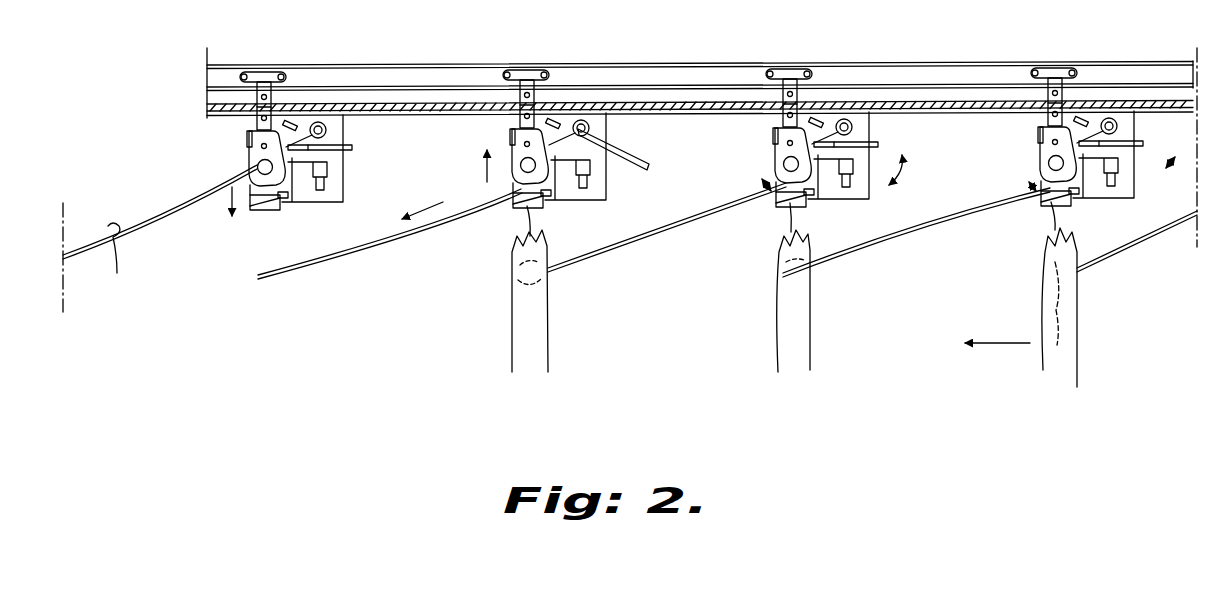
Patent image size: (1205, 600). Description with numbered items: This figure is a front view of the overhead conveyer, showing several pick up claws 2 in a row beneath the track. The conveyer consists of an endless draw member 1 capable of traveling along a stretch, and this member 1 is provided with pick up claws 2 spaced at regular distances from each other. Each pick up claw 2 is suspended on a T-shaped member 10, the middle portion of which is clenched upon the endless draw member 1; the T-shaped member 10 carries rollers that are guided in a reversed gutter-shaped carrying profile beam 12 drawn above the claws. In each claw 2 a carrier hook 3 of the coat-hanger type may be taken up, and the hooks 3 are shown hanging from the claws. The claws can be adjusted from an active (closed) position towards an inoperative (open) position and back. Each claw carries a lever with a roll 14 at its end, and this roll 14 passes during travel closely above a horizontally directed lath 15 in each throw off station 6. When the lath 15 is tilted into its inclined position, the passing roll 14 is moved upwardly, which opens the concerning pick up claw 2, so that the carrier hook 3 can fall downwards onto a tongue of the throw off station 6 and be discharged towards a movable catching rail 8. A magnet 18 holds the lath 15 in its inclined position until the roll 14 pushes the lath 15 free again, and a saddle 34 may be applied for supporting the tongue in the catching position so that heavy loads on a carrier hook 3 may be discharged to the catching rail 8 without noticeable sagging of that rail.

The endless draw member 1 is at (1160, 100).
The carrying profile beam 12 is at (985, 68).
The T-shaped member 10 is at (250, 125).
The magnet 18 is at (290, 126).
The pick up claw 2 is at (242, 140).
The roll 14 is at (327, 131).
The lath 15 is at (382, 150).
The throw off station 6 is at (350, 178).
The saddle 34 is at (268, 204).
The movable catching rail 8 is at (86, 243).
The carrier hook 3 is at (117, 273).